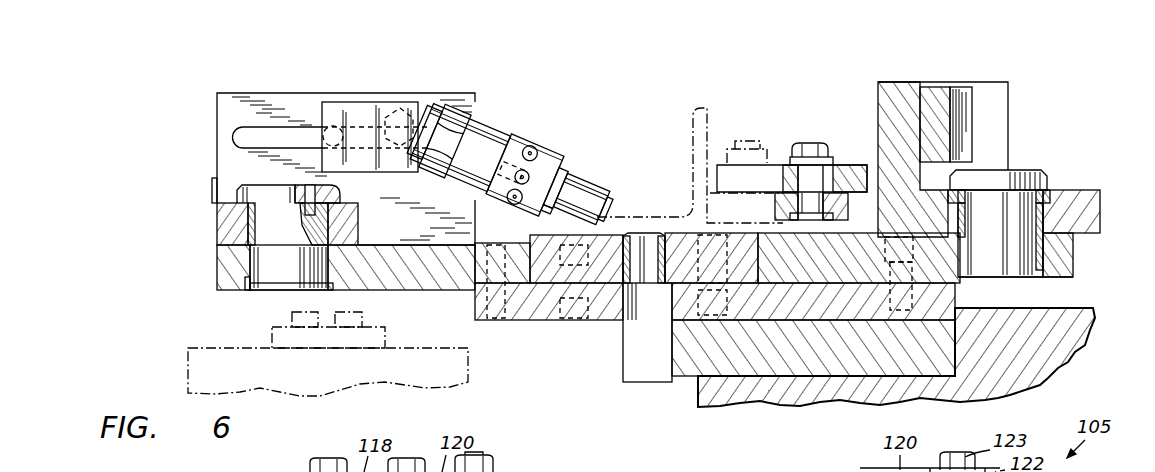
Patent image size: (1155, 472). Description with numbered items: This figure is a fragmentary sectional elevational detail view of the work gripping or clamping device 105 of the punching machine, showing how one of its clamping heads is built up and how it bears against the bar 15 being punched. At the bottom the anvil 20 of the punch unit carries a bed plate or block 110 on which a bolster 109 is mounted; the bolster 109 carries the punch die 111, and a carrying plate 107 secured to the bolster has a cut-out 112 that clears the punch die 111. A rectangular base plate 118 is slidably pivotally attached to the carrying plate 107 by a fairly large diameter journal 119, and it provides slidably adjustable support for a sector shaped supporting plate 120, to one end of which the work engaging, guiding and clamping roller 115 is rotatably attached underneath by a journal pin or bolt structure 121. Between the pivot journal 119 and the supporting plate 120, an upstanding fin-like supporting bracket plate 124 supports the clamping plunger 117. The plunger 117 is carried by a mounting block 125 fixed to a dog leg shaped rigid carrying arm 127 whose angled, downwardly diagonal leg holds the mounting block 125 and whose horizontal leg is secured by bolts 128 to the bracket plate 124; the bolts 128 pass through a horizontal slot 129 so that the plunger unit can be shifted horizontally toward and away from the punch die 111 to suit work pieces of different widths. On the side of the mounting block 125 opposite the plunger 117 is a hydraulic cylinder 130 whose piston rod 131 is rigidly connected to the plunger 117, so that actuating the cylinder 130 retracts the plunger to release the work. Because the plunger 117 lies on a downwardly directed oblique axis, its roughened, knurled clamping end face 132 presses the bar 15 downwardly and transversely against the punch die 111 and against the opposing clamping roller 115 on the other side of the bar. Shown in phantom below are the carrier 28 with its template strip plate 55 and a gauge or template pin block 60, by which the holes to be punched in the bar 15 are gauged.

The bar 15 is at (683, 112).
The anvil 20 is at (1067, 312).
The carrier 28 is at (200, 338).
The template strip plate 55 is at (385, 338).
The gauge or template pin block 60 is at (363, 312).
The gripping device 105 is at (1073, 113).
The carrying plate 107 is at (218, 270).
The bolster 109 is at (547, 313).
The bed plate or block 110 is at (688, 372).
The punch die 111 is at (660, 232).
The cut-out 112 is at (527, 287).
The clamping roller 115 is at (735, 205).
The clamping plunger 117 is at (588, 180).
The base plate 118 is at (217, 232).
The journal 119 is at (222, 213).
The supporting plate 120 is at (855, 165).
The journal pin or bolt structure 121 is at (811, 148).
The supporting bracket plate 124 is at (227, 103).
The mounting block 125 is at (542, 155).
The carrying arm 127 is at (340, 107).
The bolts 128 is at (318, 125).
The horizontal slot 129 is at (243, 133).
The hydraulic cylinder 130 is at (485, 137).
The piston rod 131 is at (573, 208).
The clamping end face 132 is at (606, 201).